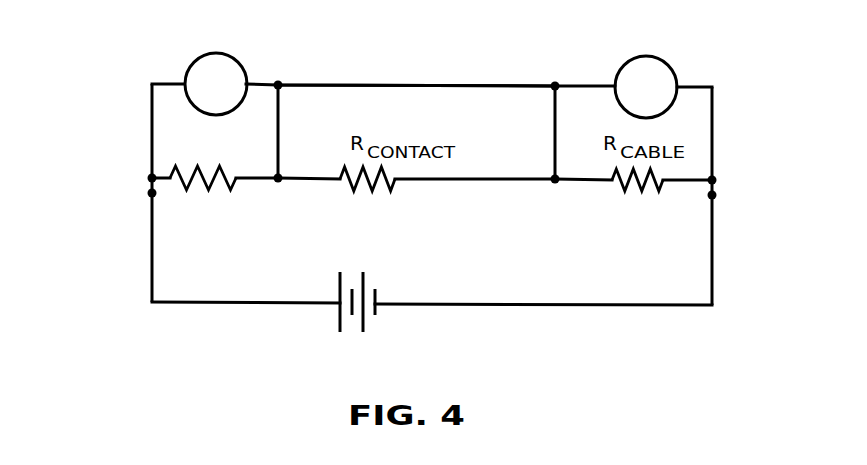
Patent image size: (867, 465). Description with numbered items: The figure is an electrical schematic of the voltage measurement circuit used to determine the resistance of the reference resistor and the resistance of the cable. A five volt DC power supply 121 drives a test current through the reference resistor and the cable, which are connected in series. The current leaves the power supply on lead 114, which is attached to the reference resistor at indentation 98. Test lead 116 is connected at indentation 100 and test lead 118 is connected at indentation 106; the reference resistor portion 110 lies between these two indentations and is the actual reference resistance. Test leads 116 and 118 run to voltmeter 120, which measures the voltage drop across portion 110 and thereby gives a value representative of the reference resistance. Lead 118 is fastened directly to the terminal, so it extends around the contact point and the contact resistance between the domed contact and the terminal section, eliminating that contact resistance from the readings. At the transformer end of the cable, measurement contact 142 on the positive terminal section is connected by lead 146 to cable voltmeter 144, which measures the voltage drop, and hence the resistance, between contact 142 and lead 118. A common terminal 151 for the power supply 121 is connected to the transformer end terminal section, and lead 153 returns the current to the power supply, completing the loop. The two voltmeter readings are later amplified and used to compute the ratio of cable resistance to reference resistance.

The indentation 98 is at (152, 193).
The indentation 100 is at (150, 178).
The indentation 106 is at (280, 180).
The reference resistor portion 110 is at (212, 191).
The lead 114 is at (152, 263).
The test lead 116 is at (152, 137).
The test lead 118 is at (465, 85).
The voltmeter 120 is at (195, 60).
The 5 volt DC power supply 121 is at (375, 316).
The measurement contact 142 is at (712, 180).
The cable voltmeter 144 is at (670, 67).
The lead 146 is at (712, 143).
The common terminal 151 is at (712, 195).
The lead 153 is at (590, 306).